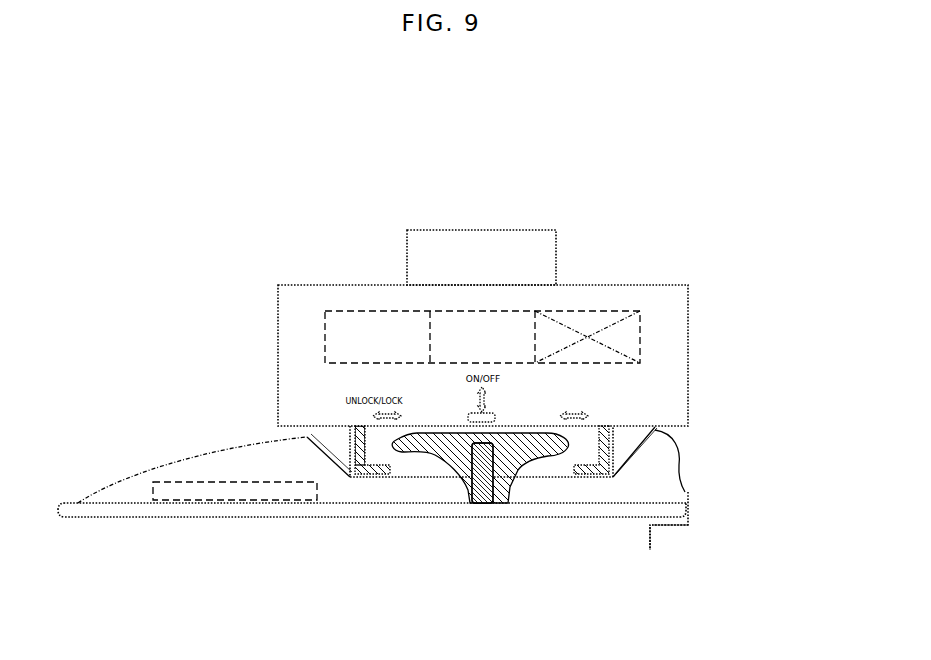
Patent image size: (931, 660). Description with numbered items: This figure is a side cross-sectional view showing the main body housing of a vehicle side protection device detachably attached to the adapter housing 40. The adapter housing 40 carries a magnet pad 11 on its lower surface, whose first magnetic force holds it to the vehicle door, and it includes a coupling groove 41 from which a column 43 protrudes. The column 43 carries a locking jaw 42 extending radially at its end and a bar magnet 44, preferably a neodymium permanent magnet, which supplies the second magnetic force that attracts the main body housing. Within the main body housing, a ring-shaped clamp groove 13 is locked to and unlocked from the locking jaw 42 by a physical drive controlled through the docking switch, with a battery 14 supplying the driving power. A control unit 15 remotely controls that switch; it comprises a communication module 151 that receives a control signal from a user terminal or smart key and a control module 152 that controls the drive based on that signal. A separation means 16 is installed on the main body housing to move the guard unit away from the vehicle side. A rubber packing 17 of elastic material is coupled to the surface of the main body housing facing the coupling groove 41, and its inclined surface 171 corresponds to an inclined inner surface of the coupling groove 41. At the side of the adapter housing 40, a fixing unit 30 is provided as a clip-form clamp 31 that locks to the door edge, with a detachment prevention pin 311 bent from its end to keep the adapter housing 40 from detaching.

The magnet pad 11 is at (132, 510).
The clamp groove 13 is at (600, 426).
The battery 14 is at (573, 323).
The control unit 15 is at (533, 128).
The communication module 151 is at (483, 323).
The control module 152 is at (382, 323).
The separation means 16 is at (557, 233).
The rubber packing 17 is at (646, 428).
The inclined surface 171 is at (637, 456).
The fixing unit 30 is at (773, 512).
The clamp 31 is at (690, 527).
The detachment prevention pin 311 is at (652, 550).
The adapter housing 40 is at (143, 441).
The coupling groove 41 is at (555, 477).
The locking jaw 42 is at (413, 452).
The column 43 is at (487, 573).
The bar magnet 44 is at (472, 483).